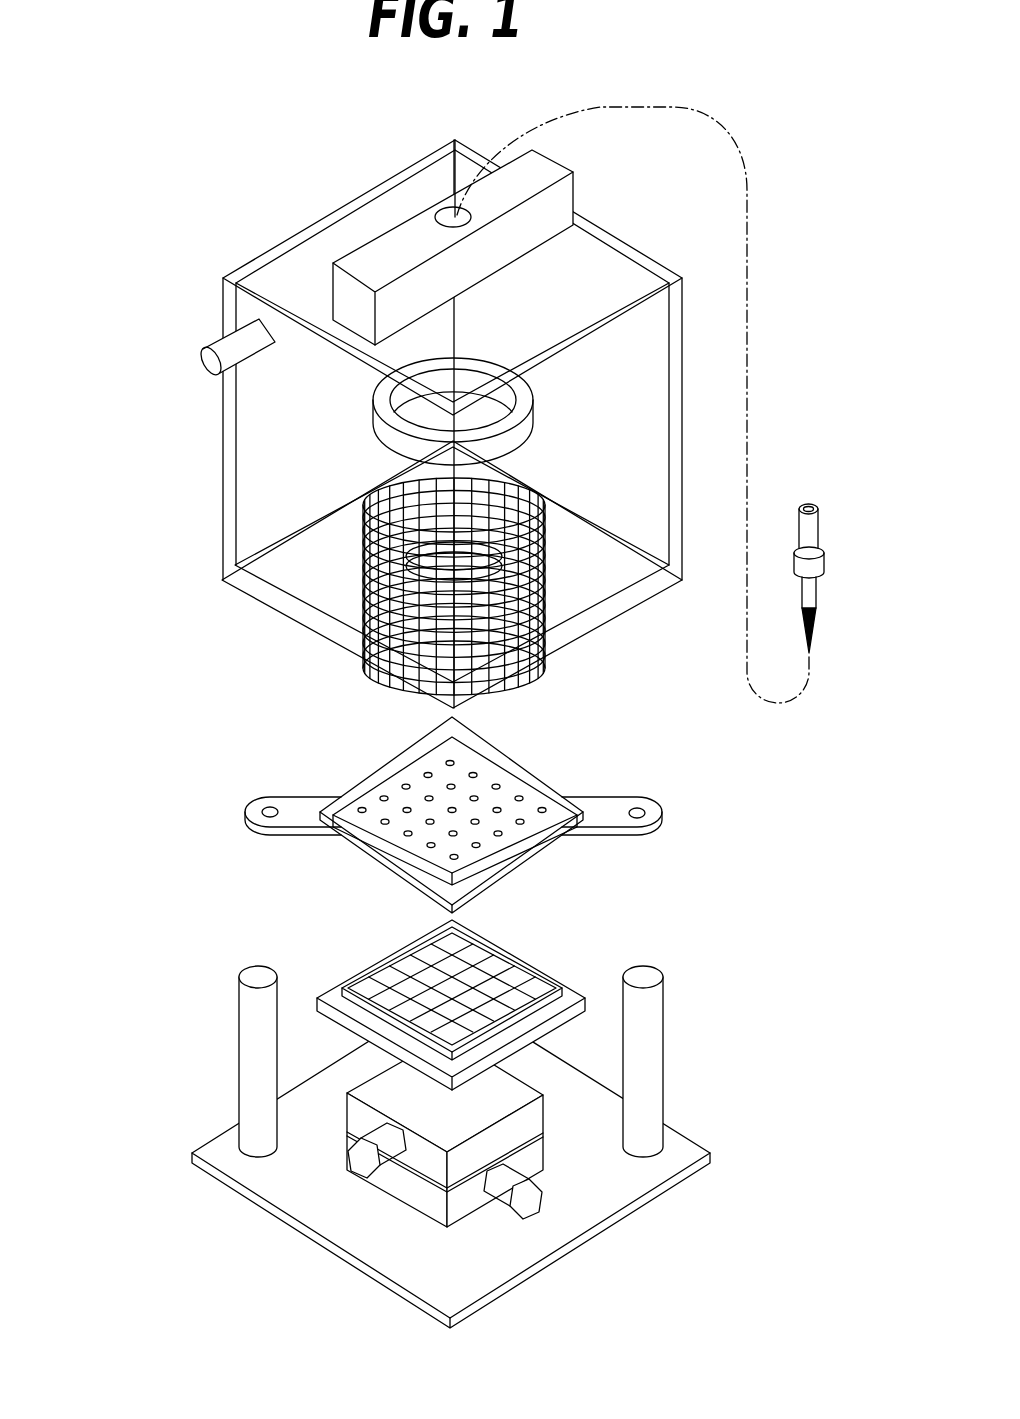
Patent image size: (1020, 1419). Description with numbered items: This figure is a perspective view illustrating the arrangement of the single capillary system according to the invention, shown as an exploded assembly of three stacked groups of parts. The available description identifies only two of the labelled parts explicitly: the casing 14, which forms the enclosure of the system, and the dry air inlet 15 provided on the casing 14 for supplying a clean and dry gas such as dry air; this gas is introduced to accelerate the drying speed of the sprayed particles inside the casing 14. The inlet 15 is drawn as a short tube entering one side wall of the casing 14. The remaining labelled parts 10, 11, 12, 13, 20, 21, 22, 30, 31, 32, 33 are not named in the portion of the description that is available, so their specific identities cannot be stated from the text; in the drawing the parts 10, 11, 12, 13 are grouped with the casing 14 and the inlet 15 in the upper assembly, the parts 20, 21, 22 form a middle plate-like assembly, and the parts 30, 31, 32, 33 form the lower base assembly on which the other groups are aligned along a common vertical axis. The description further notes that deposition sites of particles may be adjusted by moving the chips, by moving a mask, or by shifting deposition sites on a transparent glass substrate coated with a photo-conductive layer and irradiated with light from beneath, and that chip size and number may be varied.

The culture container unit 10 is at (162, 700).
The nozzle 11 is at (802, 567).
The ring 12 is at (497, 367).
The mesh cylinder 13 is at (367, 607).
The casing 14 is at (288, 593).
The dry air inlet 15 is at (208, 362).
The plate unit 20 is at (162, 725).
The perforated plate 21 is at (490, 822).
The plate holder 22 is at (502, 743).
The base unit 30 is at (162, 920).
The tray 31 is at (417, 963).
The grid plate 32 is at (522, 962).
The clamp block 33 is at (532, 1195).